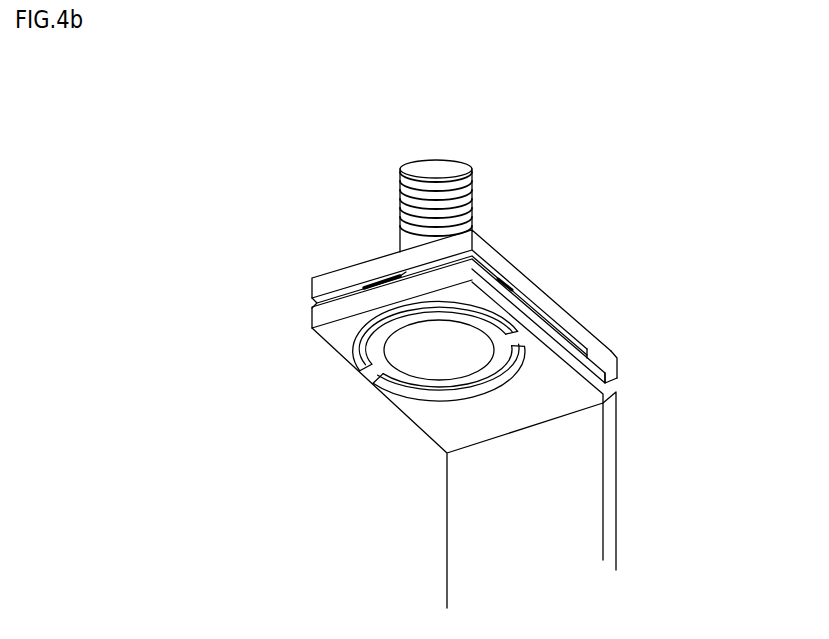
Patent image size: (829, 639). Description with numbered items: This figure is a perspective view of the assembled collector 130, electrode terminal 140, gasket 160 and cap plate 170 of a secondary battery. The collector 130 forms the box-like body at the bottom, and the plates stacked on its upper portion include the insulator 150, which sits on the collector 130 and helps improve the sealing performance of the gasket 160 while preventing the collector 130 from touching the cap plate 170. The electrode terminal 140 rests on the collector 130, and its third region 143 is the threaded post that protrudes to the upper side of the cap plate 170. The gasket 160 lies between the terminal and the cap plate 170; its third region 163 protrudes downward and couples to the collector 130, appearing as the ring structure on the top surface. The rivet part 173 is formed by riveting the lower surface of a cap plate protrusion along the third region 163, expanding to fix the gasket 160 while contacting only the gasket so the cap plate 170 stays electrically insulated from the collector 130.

The collector 130 is at (624, 468).
The electrode terminal 140 is at (461, 223).
The third region 143 is at (442, 165).
The insulator 150 is at (584, 357).
The gasket 160 is at (508, 283).
The cap plate 170 is at (550, 307).
The third region 163 is at (352, 357).
The rivet part 173 is at (400, 394).